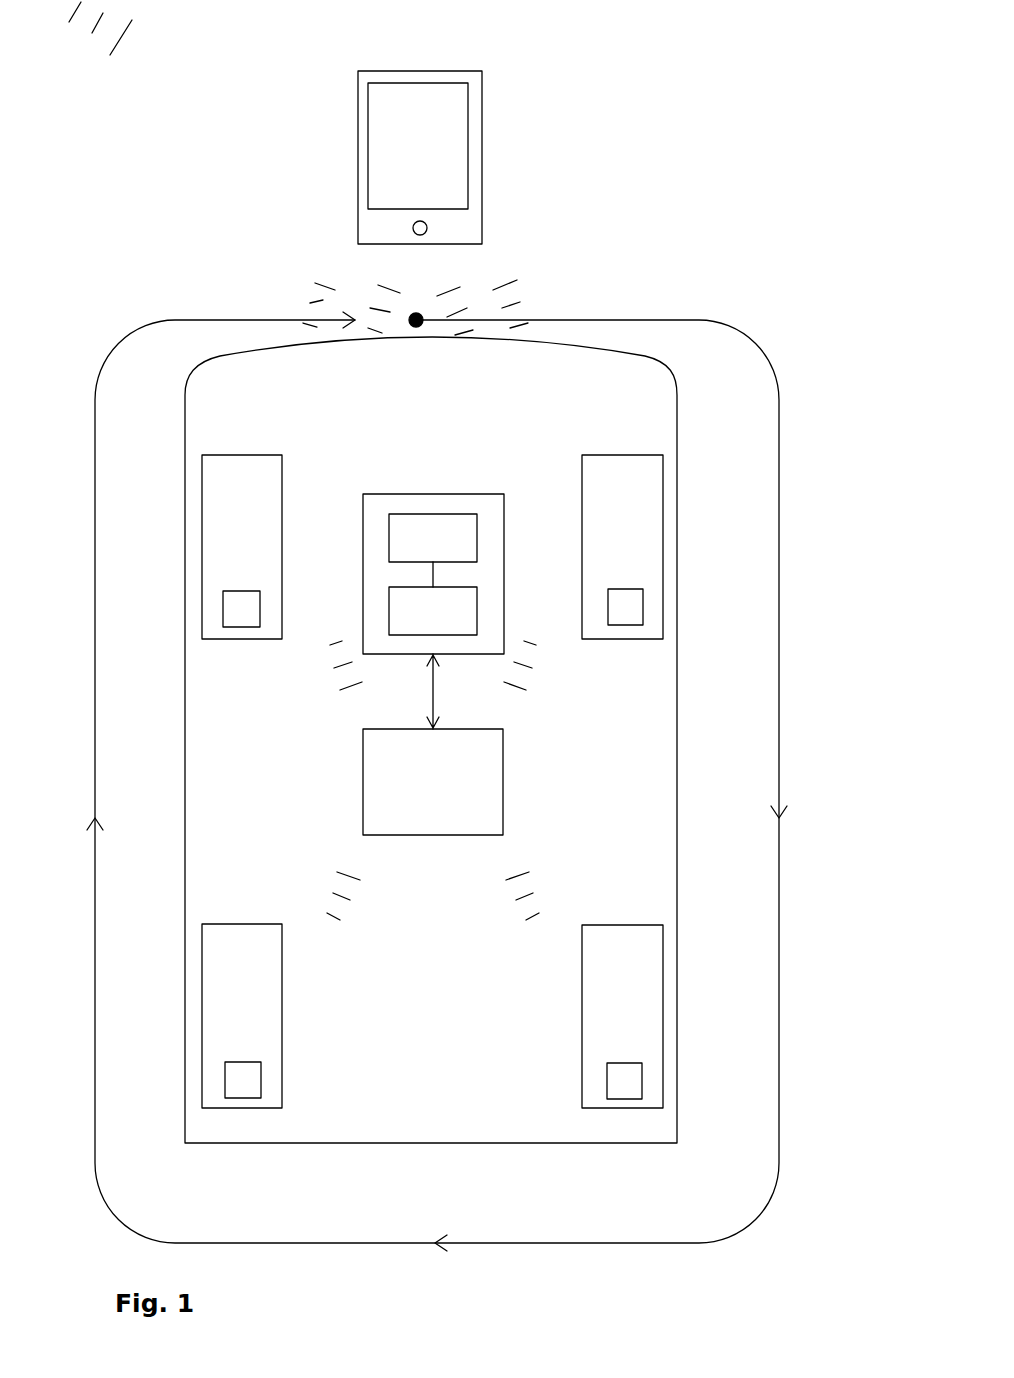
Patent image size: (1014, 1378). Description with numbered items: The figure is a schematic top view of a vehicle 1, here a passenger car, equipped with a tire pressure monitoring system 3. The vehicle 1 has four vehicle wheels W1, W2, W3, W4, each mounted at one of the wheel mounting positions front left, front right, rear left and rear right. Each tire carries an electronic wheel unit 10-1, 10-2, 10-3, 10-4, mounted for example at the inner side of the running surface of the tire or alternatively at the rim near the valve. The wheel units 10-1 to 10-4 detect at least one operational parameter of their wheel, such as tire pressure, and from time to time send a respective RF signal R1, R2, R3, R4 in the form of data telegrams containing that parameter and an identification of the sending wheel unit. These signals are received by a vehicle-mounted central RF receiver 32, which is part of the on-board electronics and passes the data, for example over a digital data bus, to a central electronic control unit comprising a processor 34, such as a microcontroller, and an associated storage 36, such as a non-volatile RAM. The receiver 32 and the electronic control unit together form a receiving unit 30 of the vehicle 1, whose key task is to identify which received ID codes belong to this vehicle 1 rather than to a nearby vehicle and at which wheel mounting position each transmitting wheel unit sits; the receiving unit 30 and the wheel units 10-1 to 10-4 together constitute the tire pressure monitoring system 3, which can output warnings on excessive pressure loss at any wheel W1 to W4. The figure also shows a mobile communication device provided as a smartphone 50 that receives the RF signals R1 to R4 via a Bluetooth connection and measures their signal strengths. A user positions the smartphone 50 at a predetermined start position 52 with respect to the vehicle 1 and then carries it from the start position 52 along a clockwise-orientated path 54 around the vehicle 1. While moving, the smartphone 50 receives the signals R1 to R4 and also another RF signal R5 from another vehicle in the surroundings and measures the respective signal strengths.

The vehicle 1 is at (157, 410).
The tire pressure monitoring system 3 is at (327, 438).
The electronic wheel unit 10-1 is at (233, 604).
The electronic wheel unit 10-2 is at (637, 602).
The electronic wheel unit 10-3 is at (234, 1075).
The electronic wheel unit 10-4 is at (633, 1077).
The vehicle wheel W1 is at (219, 523).
The vehicle wheel W2 is at (644, 526).
The vehicle wheel W3 is at (224, 985).
The vehicle wheel W4 is at (647, 984).
The receiving unit 30 is at (332, 777).
The central RF receiver 32 is at (449, 797).
The processor 34 is at (449, 626).
The storage 36 is at (449, 553).
The smartphone 50 is at (515, 72).
The start position 52 is at (413, 327).
The clockwise-orientated path 54 is at (667, 319).
The RF signal R1 is at (343, 264).
The RF signal R2 is at (499, 262).
The RF signal R3 is at (405, 264).
The RF signal R4 is at (444, 260).
The RF signal R5 is at (143, 50).